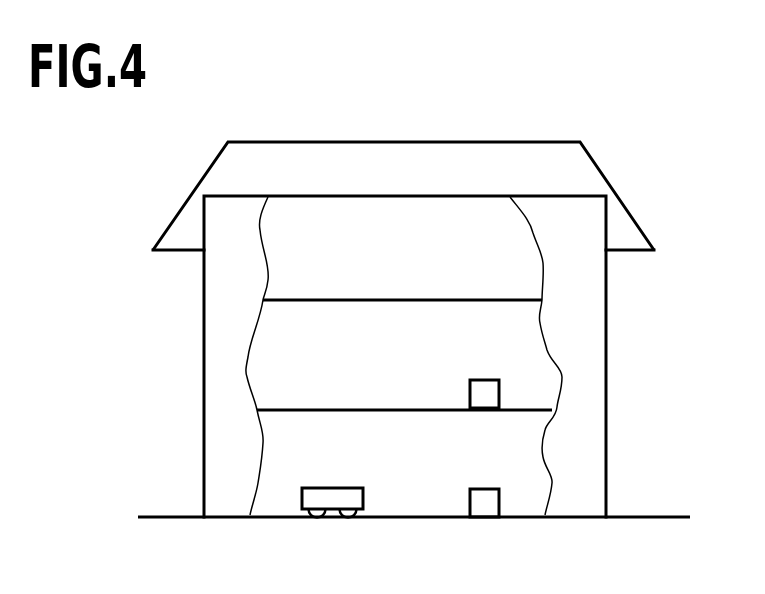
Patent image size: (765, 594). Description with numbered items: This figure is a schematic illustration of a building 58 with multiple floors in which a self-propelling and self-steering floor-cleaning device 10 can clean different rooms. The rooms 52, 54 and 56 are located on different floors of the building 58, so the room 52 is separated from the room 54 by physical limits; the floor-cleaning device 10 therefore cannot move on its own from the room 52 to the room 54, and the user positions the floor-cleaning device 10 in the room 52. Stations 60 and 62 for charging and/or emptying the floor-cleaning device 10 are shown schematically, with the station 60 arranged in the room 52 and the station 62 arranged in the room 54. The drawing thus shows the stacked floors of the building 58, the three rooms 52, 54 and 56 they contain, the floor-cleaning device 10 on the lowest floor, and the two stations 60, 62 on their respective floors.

The floor-cleaning device 10 is at (356, 463).
The room 52 is at (537, 498).
The room 54 is at (528, 384).
The room 56 is at (518, 274).
The building 58 is at (522, 111).
The station 60 is at (483, 507).
The station 62 is at (490, 388).